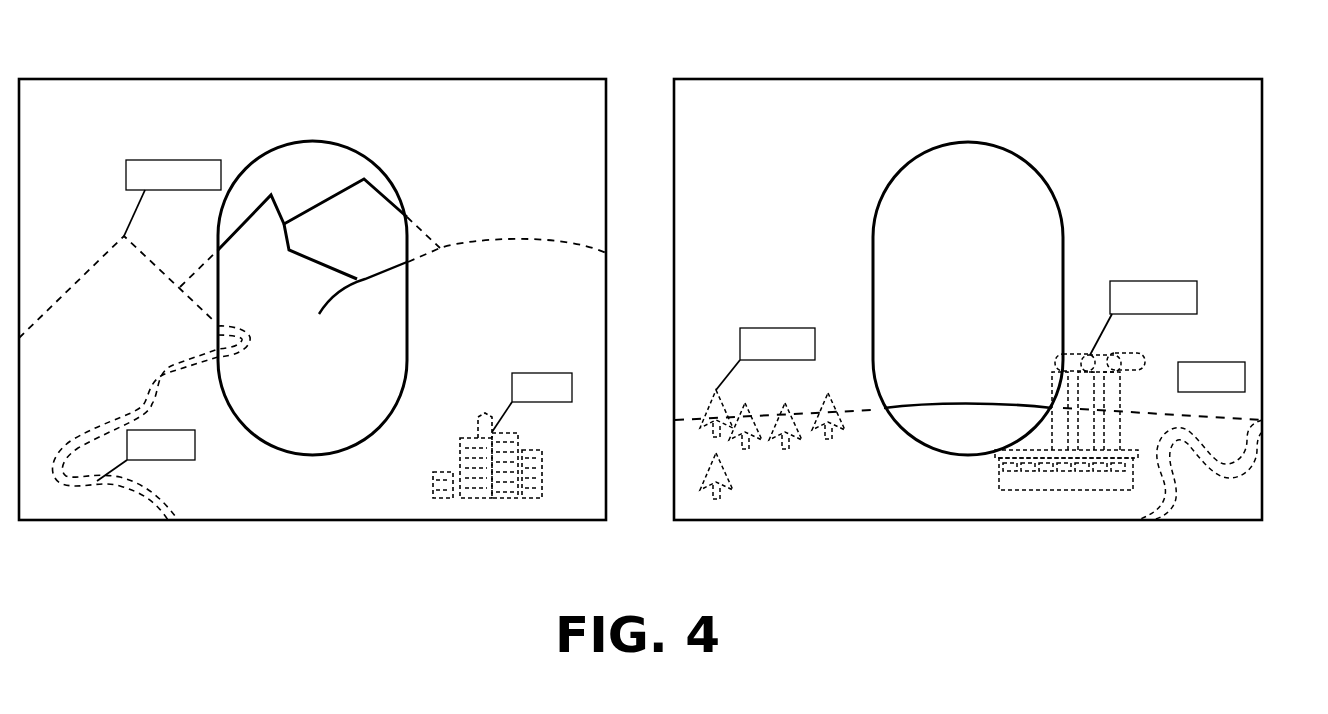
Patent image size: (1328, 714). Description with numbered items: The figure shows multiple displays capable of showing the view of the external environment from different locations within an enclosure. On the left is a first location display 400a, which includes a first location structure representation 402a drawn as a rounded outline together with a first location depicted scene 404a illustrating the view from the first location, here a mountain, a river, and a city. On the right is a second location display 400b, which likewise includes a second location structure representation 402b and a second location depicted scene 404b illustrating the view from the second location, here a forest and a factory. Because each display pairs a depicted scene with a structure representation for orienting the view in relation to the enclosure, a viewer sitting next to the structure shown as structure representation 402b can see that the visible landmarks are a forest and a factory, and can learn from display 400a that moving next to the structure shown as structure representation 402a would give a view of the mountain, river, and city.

The first location display 400a is at (240, 79).
The first location structure representation 402a is at (290, 145).
The first location depicted scene 404a is at (465, 130).
The second location display 400b is at (1145, 79).
The second location structure representation 402b is at (945, 145).
The second location depicted scene 404b is at (1237, 222).